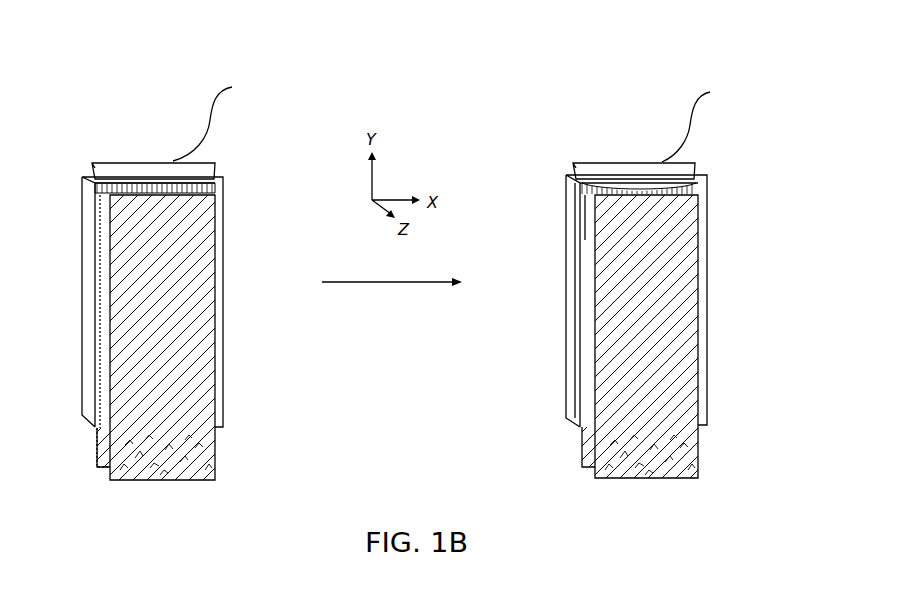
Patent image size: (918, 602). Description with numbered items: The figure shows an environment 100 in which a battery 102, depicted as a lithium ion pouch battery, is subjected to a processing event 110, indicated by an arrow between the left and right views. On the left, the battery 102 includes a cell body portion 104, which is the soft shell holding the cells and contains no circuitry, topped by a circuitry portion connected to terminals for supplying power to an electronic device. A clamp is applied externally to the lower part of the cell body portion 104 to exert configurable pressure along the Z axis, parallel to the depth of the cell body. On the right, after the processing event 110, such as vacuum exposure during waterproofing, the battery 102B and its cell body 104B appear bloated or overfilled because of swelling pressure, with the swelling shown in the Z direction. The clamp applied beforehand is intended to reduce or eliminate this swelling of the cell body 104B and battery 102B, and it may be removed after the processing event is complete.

The environment 100 is at (725, 46).
The battery 102 is at (92, 428).
The swollen battery 102B is at (574, 430).
The cell body portion 104 is at (227, 207).
The swollen cell body 104B is at (710, 189).
The processing event 110 is at (392, 283).